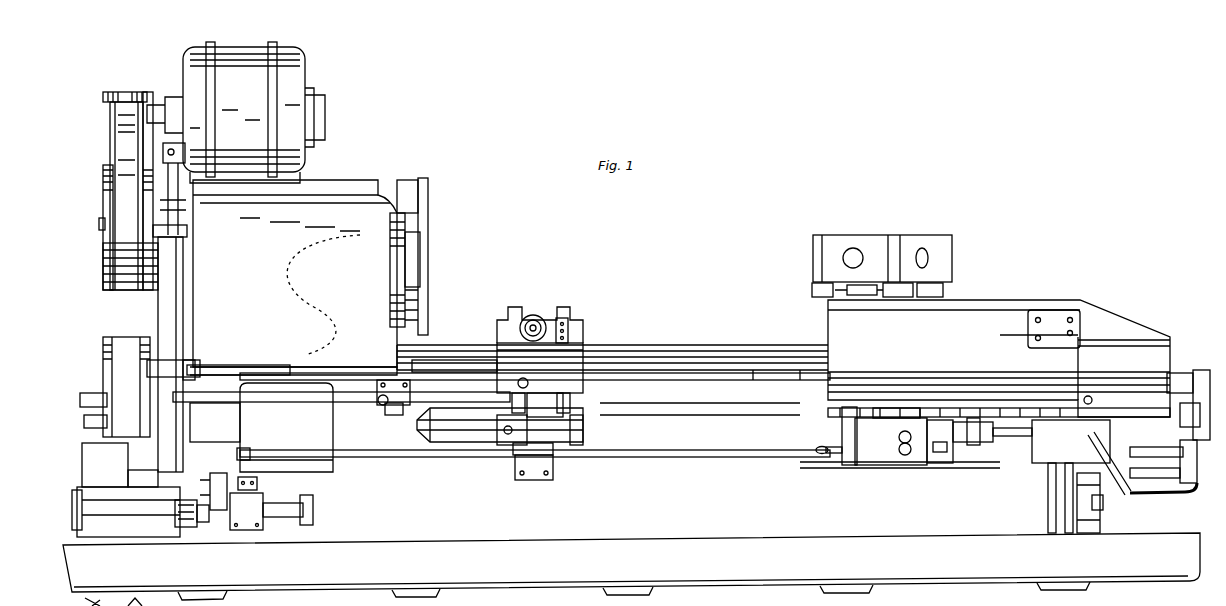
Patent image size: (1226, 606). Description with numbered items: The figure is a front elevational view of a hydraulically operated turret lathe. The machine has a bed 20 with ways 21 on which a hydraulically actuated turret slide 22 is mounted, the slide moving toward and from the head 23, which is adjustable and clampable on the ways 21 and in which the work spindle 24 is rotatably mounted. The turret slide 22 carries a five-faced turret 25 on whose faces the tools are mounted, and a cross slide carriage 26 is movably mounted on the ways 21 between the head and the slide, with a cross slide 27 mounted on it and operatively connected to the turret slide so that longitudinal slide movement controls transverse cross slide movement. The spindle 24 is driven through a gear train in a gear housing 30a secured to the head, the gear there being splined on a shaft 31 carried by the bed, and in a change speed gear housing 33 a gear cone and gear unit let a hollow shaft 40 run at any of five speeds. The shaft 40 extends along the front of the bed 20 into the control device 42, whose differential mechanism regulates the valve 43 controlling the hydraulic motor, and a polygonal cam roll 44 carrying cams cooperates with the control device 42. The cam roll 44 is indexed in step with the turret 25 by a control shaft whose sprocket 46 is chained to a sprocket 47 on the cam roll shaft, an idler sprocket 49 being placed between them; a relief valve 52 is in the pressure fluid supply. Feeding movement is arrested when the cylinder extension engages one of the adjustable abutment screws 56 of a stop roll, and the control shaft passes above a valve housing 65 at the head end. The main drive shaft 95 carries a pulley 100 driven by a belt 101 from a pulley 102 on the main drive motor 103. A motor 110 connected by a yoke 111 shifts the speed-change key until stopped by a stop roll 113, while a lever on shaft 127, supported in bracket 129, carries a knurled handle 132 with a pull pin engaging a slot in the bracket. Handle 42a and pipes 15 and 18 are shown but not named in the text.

The bed 20 is at (631, 550).
The ways 21 is at (715, 350).
The turret slide 22 is at (975, 300).
The head 23 is at (330, 190).
The work spindle 24 is at (420, 262).
The turret 25 is at (868, 240).
The cross slide carriage 26 is at (572, 357).
The cross slide 27 is at (575, 328).
The gear housing 30a is at (172, 290).
The shaft 31 is at (228, 366).
The change speed gear housing 33 is at (122, 340).
The hollow shaft 40 is at (368, 458).
The control device 42 is at (876, 462).
The handle 42a is at (827, 455).
The valve 43 is at (1040, 447).
The cam roll 44 is at (942, 381).
The sprocket 46 is at (1195, 485).
The sprocket 47 is at (1195, 375).
The idler sprocket 49 is at (1180, 449).
The pipe 15 is at (1137, 450).
The pipe 18 is at (1190, 440).
The relief valve 52 is at (1103, 514).
The adjustable abutment screws 56 is at (88, 393).
The valve housing 65 is at (98, 458).
The main drive shaft 95 is at (100, 226).
The pulley 100 is at (104, 183).
The belt 101 is at (113, 150).
The pulley 102 is at (105, 92).
The main drive motor 103 is at (245, 48).
The motor 110 is at (283, 512).
The yoke 111 is at (221, 478).
The stop roll 113 is at (185, 527).
The shaft 127 is at (203, 400).
The bracket 129 is at (377, 388).
The knurled handle 132 is at (382, 405).